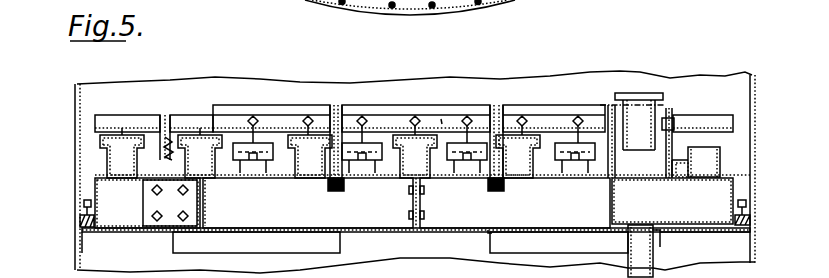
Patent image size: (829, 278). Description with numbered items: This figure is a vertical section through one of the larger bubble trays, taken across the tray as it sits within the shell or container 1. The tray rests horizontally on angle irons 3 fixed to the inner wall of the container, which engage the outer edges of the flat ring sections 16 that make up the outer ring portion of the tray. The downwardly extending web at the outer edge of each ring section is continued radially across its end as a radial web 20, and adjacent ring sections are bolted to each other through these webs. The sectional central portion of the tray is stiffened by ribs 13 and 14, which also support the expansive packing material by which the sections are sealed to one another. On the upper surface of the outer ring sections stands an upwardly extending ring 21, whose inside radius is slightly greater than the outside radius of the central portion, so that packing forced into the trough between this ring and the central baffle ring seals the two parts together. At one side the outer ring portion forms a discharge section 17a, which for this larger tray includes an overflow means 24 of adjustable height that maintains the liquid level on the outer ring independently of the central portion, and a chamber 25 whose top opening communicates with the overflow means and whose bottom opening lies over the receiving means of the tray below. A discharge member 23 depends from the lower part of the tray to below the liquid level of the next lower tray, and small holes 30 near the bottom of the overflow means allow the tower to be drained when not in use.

The housing 1 is at (74, 239).
The angle irons 3 is at (173, 246).
The rib 13 is at (330, 181).
The rib 14 is at (341, 182).
The ring sections 16 is at (97, 180).
The discharge section 17a is at (722, 172).
The radial web 20 is at (403, 2).
The upwardly extending ring 21 is at (160, 163).
The discharge member 23 is at (617, 97).
The overflow means 24 is at (735, 138).
The chamber 25 is at (677, 214).
The small holes 30 is at (722, 156).